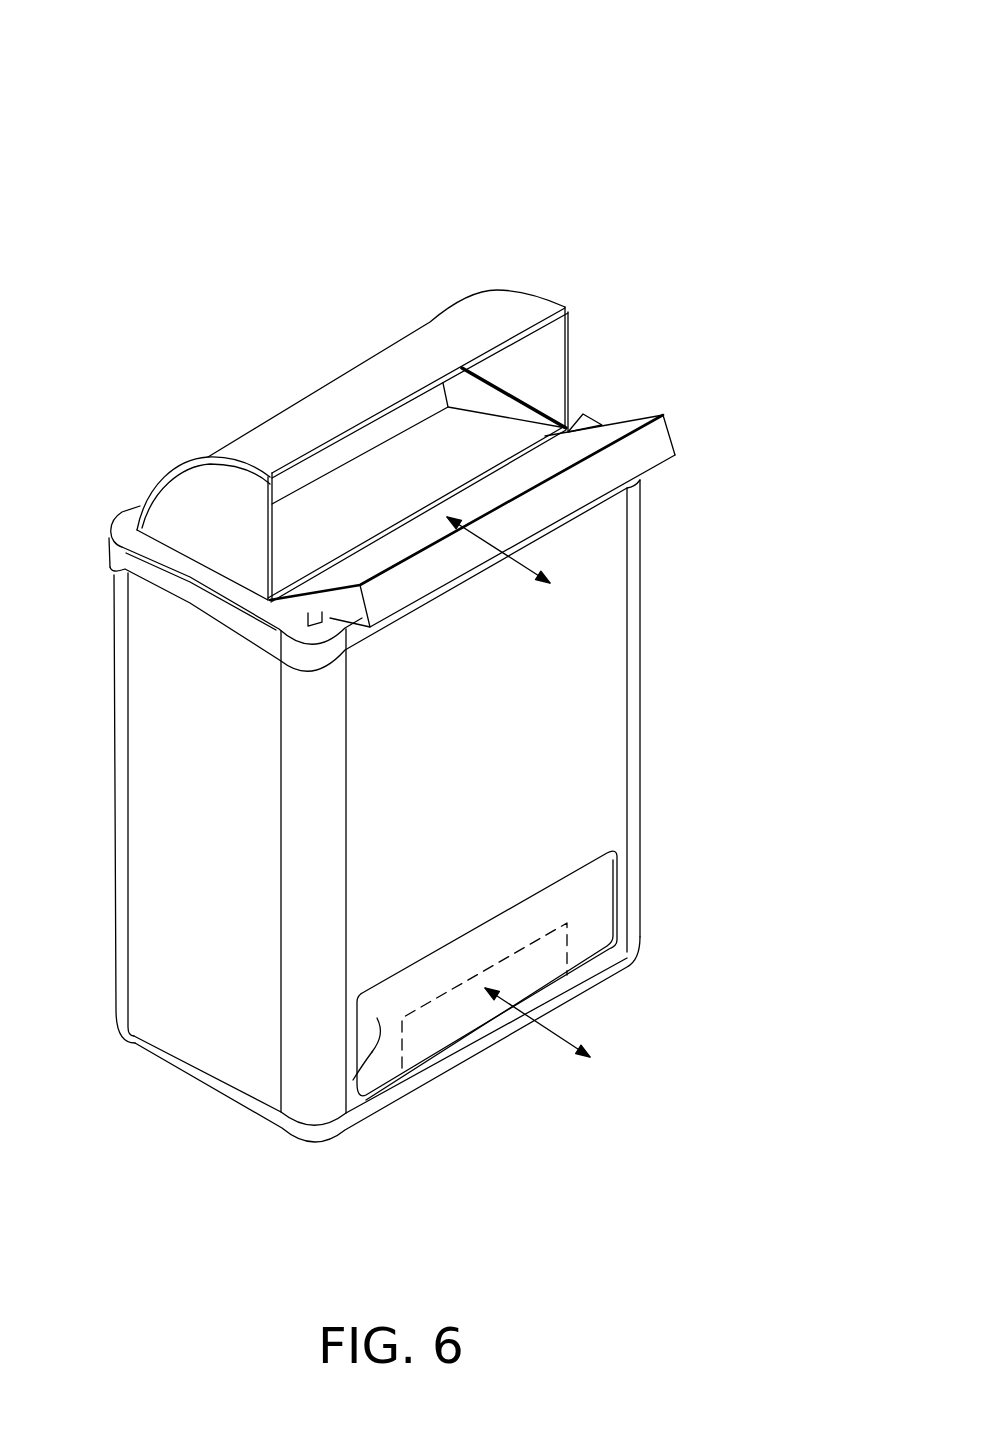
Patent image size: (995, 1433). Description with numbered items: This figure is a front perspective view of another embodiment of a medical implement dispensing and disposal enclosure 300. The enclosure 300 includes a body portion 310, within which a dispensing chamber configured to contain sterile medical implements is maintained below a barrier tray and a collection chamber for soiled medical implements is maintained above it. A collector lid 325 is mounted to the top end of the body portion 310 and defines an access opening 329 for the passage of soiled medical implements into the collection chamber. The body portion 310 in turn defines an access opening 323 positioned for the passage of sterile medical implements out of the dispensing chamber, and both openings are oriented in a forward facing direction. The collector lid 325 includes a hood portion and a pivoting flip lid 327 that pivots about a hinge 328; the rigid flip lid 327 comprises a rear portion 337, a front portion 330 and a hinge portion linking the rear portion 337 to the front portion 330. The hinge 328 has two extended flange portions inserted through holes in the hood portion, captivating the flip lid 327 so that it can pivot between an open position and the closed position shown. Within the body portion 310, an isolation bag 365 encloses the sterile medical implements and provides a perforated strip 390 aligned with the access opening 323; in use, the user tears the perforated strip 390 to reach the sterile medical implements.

The medical implement dispensing and disposal enclosure 300 is at (153, 163).
The body portion 310 is at (642, 705).
The access opening 323 is at (607, 847).
The collector lid 325 is at (530, 297).
The flip lid 327 is at (648, 462).
The hinge 328 is at (307, 575).
The access opening 329 is at (490, 437).
The front portion 330 is at (675, 430).
The rear portion 337 is at (340, 463).
The isolation bag 365 is at (372, 1052).
The perforated strip 390 is at (400, 1042).